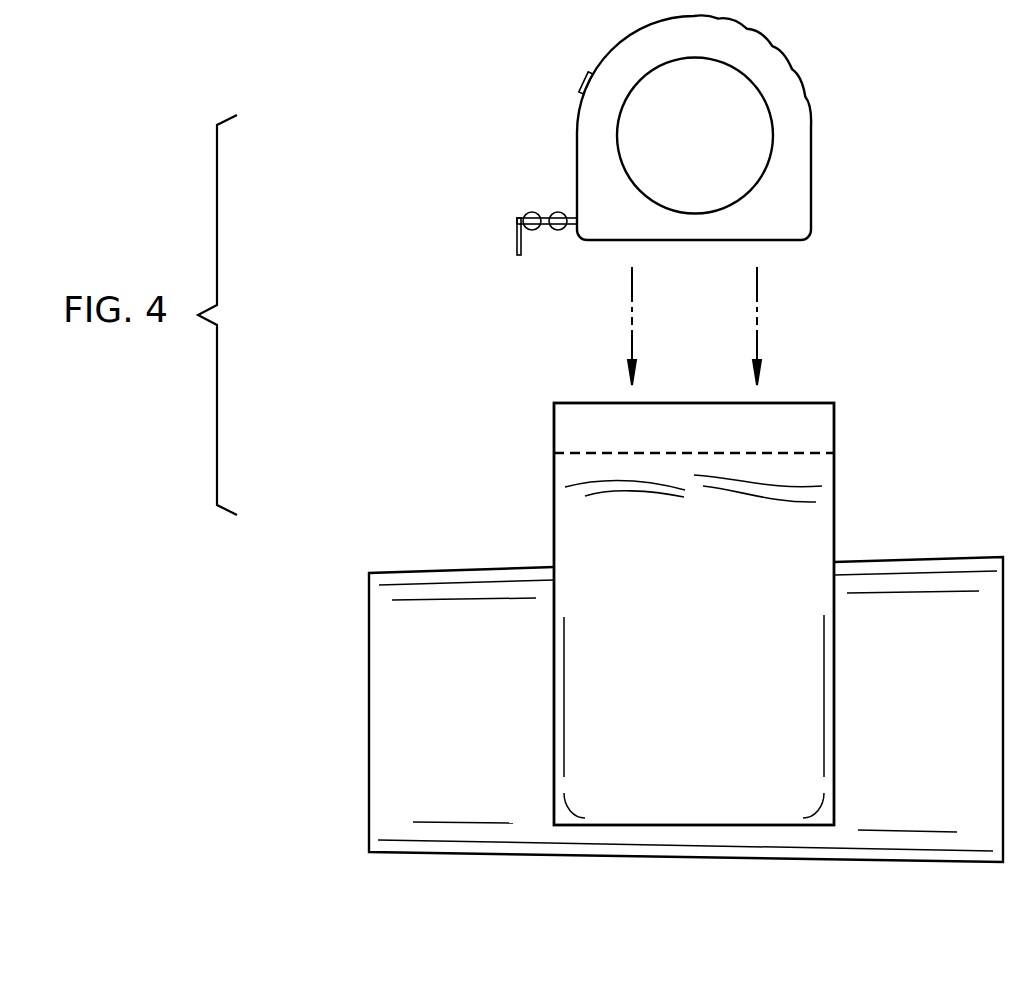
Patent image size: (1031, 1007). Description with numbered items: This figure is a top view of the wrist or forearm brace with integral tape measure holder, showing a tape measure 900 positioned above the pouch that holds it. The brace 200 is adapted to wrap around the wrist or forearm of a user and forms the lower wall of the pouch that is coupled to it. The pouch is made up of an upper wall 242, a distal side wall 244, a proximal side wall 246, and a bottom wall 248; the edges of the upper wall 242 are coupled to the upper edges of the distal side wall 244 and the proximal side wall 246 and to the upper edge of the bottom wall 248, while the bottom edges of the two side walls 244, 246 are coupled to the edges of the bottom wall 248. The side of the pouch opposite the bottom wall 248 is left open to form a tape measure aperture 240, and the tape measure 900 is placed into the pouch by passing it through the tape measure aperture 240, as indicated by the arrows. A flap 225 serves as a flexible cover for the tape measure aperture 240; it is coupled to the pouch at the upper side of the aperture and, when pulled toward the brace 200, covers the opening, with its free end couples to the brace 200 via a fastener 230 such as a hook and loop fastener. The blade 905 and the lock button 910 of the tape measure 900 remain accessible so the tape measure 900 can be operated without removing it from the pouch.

The brace 200 is at (427, 607).
The flap 225 is at (577, 530).
The fastener 230 is at (813, 427).
The tape measure aperture 240 is at (795, 600).
The upper wall 242 is at (612, 790).
The distal side wall 244 is at (554, 682).
The proximal side wall 246 is at (834, 718).
The bottom wall 248 is at (728, 825).
The tape measure 900 is at (793, 147).
The blade 905 is at (538, 213).
The lock button 910 is at (583, 84).